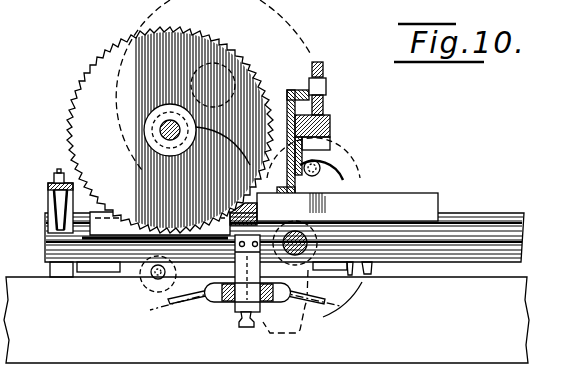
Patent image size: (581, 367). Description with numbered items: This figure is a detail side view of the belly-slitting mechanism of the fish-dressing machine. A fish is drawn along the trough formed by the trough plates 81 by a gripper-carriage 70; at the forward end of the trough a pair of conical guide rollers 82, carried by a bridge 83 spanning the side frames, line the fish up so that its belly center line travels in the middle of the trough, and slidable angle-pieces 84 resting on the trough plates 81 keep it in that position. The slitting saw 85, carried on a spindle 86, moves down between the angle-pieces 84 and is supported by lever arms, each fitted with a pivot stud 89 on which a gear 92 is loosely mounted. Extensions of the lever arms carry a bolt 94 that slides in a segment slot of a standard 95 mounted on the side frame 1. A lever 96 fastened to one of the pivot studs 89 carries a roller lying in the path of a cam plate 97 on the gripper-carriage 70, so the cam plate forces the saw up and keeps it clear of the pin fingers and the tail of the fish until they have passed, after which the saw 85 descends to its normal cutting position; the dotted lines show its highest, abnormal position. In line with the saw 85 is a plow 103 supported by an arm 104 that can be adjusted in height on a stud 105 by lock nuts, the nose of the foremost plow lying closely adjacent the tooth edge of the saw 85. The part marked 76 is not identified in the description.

The side frame 1 is at (462, 330).
The gripper-carriage 70 is at (240, 315).
The adjusting knob 76 is at (249, 328).
The trough plate 81 is at (284, 233).
The conical guide roller 82 is at (56, 197).
The bridge 83 is at (52, 176).
The angle-piece 84 is at (137, 212).
The slitting saw 85 is at (118, 57).
The spindle 86 is at (160, 134).
The pivot stud 89 is at (312, 268).
The gear 92 is at (365, 274).
The bolt 94 is at (316, 166).
The standard 95 is at (348, 170).
The lever 96 is at (140, 280).
The cam plate 97 is at (171, 305).
The plow 103 is at (422, 194).
The arm 104 is at (327, 92).
The stud 105 is at (321, 62).